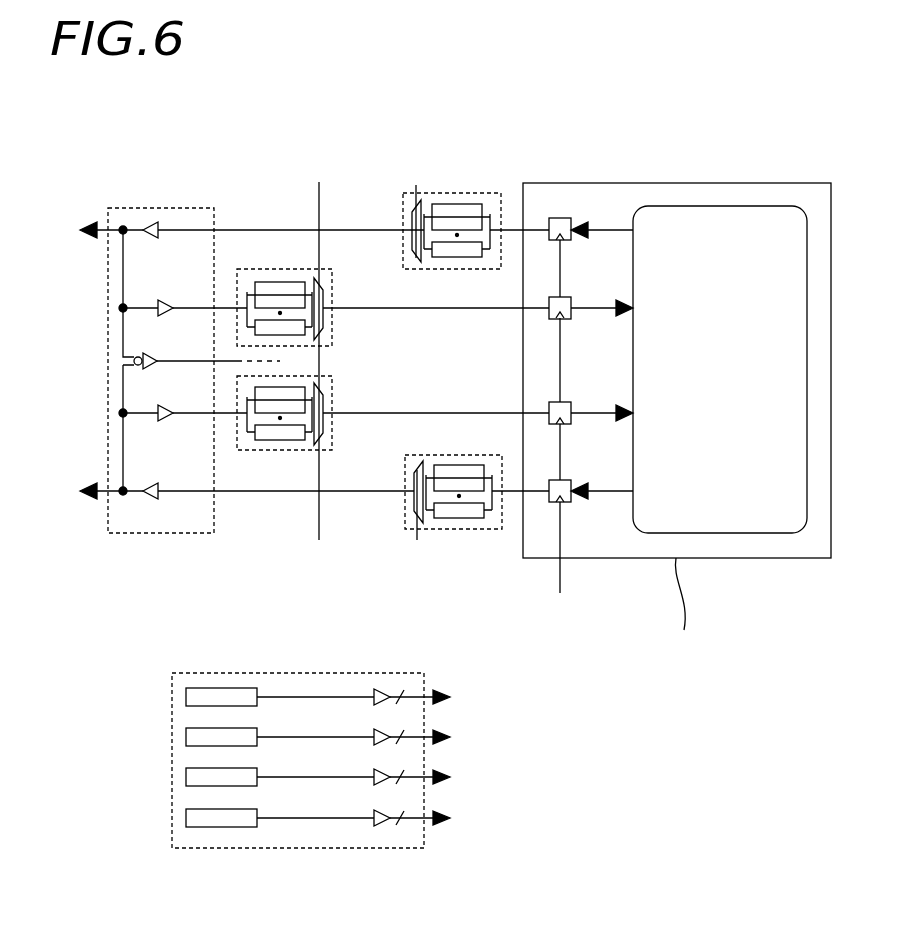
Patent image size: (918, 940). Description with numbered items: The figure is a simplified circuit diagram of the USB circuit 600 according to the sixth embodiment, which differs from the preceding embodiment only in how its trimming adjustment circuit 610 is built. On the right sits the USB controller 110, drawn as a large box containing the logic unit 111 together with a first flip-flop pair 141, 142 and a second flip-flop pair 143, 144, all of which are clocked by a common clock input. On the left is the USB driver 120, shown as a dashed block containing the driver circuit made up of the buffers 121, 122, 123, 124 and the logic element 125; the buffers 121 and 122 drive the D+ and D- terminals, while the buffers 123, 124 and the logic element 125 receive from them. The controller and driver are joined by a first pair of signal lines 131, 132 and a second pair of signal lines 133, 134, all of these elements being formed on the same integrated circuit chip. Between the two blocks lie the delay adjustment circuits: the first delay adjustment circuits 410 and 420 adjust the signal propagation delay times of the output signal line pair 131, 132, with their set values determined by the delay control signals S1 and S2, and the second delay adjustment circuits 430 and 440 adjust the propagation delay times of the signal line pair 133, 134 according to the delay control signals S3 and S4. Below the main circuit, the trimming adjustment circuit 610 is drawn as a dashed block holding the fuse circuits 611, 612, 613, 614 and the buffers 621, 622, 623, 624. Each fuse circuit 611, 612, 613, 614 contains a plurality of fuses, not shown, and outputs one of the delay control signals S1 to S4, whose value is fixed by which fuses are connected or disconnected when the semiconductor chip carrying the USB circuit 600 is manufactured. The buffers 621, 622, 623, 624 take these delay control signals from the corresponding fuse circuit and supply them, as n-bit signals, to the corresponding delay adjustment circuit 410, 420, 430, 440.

The USB circuit 600 is at (794, 89).
The USB controller 110 is at (660, 183).
The logic unit 111 is at (807, 333).
The USB driver 120 is at (190, 208).
The buffer 121 is at (152, 222).
The buffer 122 is at (152, 484).
The buffer 123 is at (164, 302).
The buffer 124 is at (178, 399).
The logic element 125 is at (180, 345).
The signal line 131 is at (236, 228).
The signal line 132 is at (292, 492).
The signal line 133 is at (440, 310).
The signal line 134 is at (470, 412).
The flip-flop 141 is at (562, 216).
The flip-flop 142 is at (572, 481).
The flip-flop 143 is at (572, 297).
The flip-flop 144 is at (572, 403).
The first delay adjustment circuit 410 is at (460, 193).
The first delay adjustment circuit 420 is at (460, 530).
The second delay adjustment circuit 430 is at (280, 269).
The second delay adjustment circuit 440 is at (332, 400).
The trimming adjustment circuit 610 is at (350, 848).
The fuse circuit 611 is at (186, 692).
The fuse circuit 612 is at (186, 732).
The fuse circuit 613 is at (186, 772).
The fuse circuit 614 is at (186, 813).
The buffer 621 is at (383, 690).
The buffer 622 is at (373, 731).
The buffer 623 is at (373, 771).
The buffer 624 is at (373, 812).